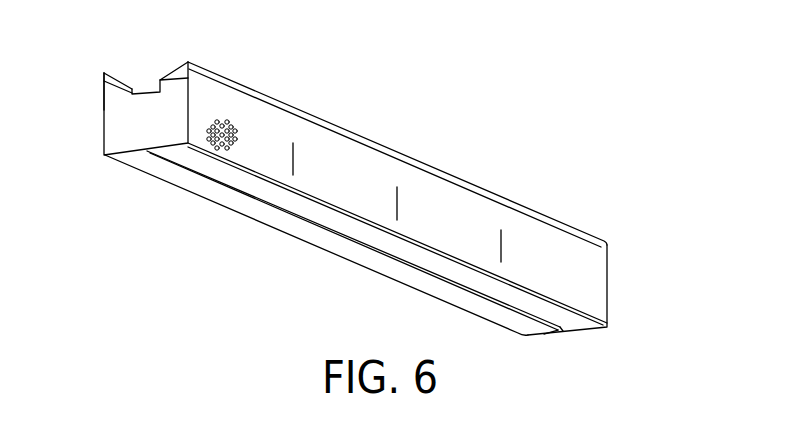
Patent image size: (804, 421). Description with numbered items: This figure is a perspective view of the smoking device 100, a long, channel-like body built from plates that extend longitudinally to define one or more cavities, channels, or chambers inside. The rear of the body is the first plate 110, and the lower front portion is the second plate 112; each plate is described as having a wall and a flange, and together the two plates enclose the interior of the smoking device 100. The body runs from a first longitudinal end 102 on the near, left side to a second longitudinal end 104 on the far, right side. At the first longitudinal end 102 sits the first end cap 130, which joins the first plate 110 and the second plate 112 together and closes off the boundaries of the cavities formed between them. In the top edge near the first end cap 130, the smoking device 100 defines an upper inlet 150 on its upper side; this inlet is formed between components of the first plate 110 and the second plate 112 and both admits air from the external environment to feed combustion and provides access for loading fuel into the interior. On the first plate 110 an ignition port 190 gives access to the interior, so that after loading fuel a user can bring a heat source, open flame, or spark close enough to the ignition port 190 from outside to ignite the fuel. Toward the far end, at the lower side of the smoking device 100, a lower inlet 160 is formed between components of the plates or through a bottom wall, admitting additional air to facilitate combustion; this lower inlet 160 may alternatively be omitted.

The smoking device 100 is at (355, 97).
The first longitudinal end 102 is at (104, 98).
The second longitudinal end 104 is at (607, 270).
The first plate 110 is at (470, 203).
The second plate 112 is at (221, 209).
The first end cap 130 is at (117, 133).
The upper inlet 150 is at (141, 85).
The lower inlet 160 is at (542, 332).
The ignition port 190 is at (228, 121).